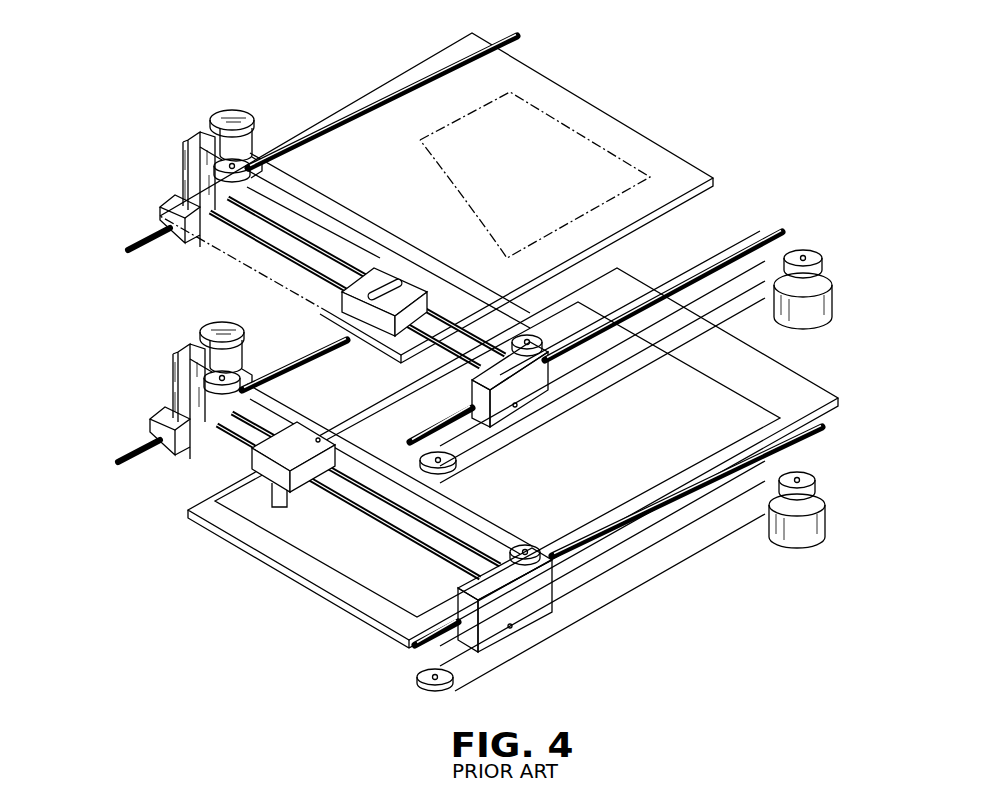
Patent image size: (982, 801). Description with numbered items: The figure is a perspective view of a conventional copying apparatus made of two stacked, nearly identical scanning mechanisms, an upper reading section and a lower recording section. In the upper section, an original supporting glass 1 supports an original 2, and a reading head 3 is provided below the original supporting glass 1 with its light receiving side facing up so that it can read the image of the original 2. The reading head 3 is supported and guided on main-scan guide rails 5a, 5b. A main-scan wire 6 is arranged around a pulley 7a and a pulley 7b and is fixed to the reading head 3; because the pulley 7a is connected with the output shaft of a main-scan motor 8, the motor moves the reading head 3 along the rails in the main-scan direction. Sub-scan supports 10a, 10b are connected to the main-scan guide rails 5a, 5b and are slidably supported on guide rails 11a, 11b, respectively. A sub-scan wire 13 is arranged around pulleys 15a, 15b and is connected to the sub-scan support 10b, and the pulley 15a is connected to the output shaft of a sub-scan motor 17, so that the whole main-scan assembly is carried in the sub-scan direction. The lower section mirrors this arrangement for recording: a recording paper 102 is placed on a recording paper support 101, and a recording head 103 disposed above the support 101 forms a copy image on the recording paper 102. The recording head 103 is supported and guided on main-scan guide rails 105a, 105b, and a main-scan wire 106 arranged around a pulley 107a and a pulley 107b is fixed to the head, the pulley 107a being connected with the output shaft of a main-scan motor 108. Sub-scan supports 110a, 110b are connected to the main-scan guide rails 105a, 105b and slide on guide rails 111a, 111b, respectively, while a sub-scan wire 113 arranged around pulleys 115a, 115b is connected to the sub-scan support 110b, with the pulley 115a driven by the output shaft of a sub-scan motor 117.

The original supporting glass 1 is at (673, 158).
The original 2 is at (553, 130).
The reading head 3 is at (400, 280).
The main-scan guide rail 5a is at (242, 235).
The main-scan guide rail 5b is at (298, 247).
The main-scan wire 6 is at (363, 222).
The pulley 7a is at (245, 162).
The pulley 7b is at (547, 345).
The main-scan motor 8 is at (232, 108).
The sub-scan support 10a is at (188, 148).
The sub-scan support 10b is at (502, 407).
The guide rail 11a is at (365, 120).
The guide rail 11b is at (693, 268).
The sub-scan wire 13 is at (622, 386).
The pulley 15a is at (808, 252).
The pulley 15b is at (458, 467).
The sub-scan motor 17 is at (830, 298).
The recording paper support 101 is at (812, 392).
The recording paper 102 is at (727, 403).
The recording head 103 is at (250, 468).
The main-scan guide rail 105a is at (383, 524).
The main-scan guide rail 105b is at (432, 538).
The main-scan wire 106 is at (497, 518).
The pulley 107a is at (243, 373).
The pulley 107b is at (573, 518).
The main-scan motor 108 is at (210, 325).
The sub-scan support 110a is at (168, 410).
The sub-scan support 110b is at (532, 602).
The guide rail 111a is at (317, 362).
The guide rail 111b is at (613, 542).
The sub-scan wire 113 is at (695, 553).
The pulley 115a is at (815, 477).
The pulley 115b is at (417, 678).
The sub-scan motor 117 is at (827, 523).